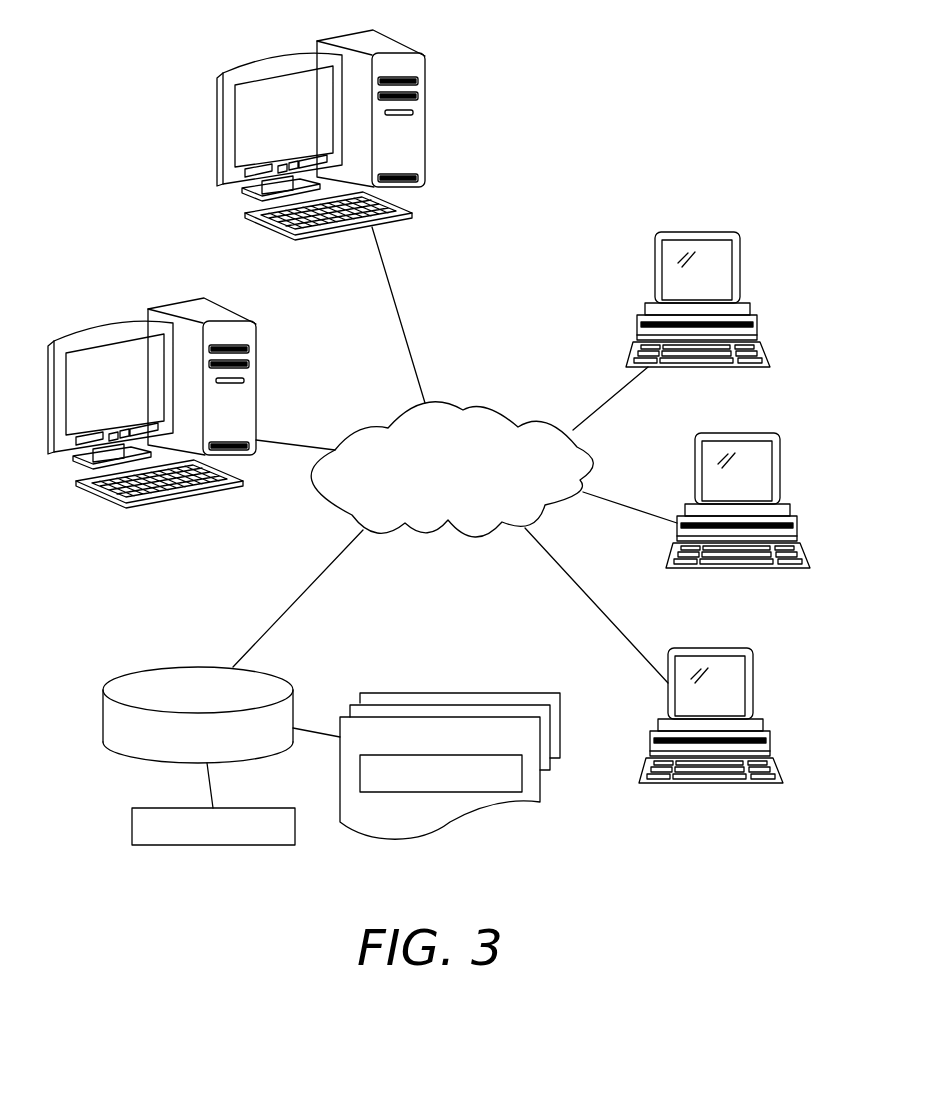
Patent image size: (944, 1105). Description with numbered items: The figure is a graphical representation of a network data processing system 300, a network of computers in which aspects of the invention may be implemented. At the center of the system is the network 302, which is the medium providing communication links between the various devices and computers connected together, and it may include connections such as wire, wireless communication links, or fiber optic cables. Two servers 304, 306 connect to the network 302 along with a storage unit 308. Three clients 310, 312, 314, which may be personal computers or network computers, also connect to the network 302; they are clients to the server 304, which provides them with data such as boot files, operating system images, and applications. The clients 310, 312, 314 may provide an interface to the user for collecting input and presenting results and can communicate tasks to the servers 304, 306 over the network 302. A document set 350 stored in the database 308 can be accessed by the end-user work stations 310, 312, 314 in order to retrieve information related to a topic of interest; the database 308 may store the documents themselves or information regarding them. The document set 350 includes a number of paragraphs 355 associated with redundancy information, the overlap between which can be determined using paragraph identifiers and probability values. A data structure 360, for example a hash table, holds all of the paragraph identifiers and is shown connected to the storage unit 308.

The network data processing system 300 is at (628, 53).
The network 302 is at (455, 455).
The server 304 is at (257, 377).
The server 306 is at (427, 137).
The storage unit 308 is at (147, 675).
The client 310 is at (737, 268).
The client 312 is at (780, 452).
The client 314 is at (753, 685).
The document set 350 is at (480, 705).
The paragraphs 355 is at (452, 792).
The data structure 360 is at (242, 845).